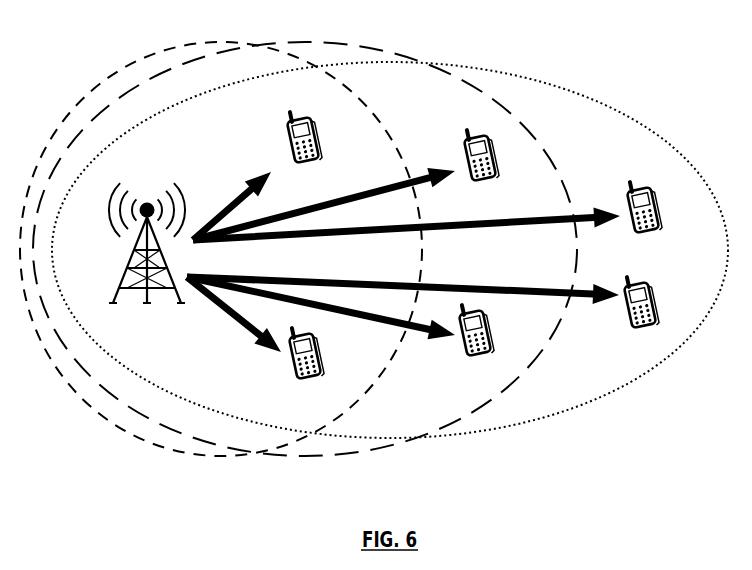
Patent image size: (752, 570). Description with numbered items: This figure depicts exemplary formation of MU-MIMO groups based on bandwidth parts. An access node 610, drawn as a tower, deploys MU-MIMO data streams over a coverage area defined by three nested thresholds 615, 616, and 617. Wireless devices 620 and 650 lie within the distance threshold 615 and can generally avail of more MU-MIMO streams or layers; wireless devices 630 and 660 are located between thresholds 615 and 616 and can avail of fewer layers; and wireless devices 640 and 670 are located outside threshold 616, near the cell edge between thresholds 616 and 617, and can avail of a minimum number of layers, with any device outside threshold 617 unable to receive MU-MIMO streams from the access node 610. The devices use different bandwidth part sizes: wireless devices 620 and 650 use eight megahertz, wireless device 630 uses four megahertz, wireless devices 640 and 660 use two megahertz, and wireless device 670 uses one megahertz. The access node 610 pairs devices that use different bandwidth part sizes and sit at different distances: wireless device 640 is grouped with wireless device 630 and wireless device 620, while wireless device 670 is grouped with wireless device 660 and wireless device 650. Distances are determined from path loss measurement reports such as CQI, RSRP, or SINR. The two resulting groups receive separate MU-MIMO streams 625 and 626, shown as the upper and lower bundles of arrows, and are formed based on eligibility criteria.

The access node 610 is at (130, 277).
The distance threshold 615 is at (188, 44).
The threshold 616 is at (350, 42).
The threshold 617 is at (493, 68).
The wireless device 620 is at (288, 124).
The MU-MIMO stream 625 is at (240, 250).
The MU-MIMO stream 626 is at (338, 268).
The wireless device 630 is at (466, 135).
The wireless device 640 is at (629, 190).
The wireless device 650 is at (295, 372).
The wireless device 660 is at (467, 348).
The wireless device 670 is at (627, 322).